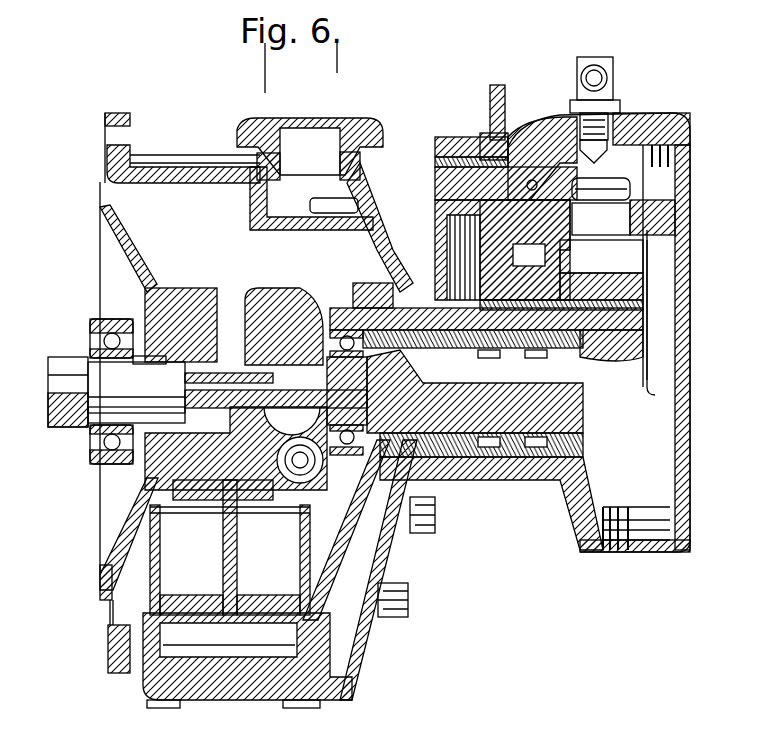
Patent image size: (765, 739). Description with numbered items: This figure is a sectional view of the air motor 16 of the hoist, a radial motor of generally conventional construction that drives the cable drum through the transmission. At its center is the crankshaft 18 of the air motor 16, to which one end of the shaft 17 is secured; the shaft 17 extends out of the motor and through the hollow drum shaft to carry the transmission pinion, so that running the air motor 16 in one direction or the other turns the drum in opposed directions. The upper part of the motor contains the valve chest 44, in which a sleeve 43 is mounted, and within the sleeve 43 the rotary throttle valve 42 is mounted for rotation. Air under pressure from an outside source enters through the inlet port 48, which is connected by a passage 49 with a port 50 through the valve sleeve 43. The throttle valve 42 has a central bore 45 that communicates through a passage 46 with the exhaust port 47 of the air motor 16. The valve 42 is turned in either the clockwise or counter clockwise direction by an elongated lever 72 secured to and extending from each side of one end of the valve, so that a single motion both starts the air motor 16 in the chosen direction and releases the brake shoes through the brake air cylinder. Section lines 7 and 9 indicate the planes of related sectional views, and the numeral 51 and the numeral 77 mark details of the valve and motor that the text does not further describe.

The air motor 16 is at (398, 205).
The shaft 17 is at (72, 420).
The crankshaft 18 is at (290, 310).
The elongated lever 72 is at (498, 140).
The section line 7- 7 is at (628, 38).
The section line 9- 9 is at (562, 110).
The valve chest 44 is at (645, 108).
The inlet port 48 is at (677, 160).
The passage 49 is at (618, 193).
The retaining ring 51 is at (630, 220).
The central bore 45 is at (647, 247).
The rotary throttle valve 42 is at (640, 283).
The sleeve 43 is at (647, 305).
The passage 46 is at (657, 320).
The exhaust port 47 is at (657, 543).
The port 50 is at (525, 240).
The splines 77 is at (467, 217).